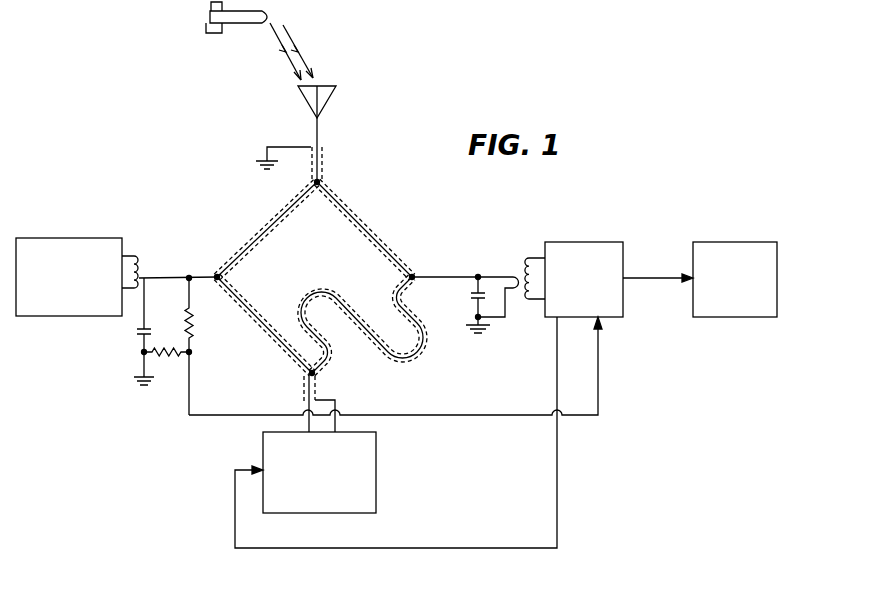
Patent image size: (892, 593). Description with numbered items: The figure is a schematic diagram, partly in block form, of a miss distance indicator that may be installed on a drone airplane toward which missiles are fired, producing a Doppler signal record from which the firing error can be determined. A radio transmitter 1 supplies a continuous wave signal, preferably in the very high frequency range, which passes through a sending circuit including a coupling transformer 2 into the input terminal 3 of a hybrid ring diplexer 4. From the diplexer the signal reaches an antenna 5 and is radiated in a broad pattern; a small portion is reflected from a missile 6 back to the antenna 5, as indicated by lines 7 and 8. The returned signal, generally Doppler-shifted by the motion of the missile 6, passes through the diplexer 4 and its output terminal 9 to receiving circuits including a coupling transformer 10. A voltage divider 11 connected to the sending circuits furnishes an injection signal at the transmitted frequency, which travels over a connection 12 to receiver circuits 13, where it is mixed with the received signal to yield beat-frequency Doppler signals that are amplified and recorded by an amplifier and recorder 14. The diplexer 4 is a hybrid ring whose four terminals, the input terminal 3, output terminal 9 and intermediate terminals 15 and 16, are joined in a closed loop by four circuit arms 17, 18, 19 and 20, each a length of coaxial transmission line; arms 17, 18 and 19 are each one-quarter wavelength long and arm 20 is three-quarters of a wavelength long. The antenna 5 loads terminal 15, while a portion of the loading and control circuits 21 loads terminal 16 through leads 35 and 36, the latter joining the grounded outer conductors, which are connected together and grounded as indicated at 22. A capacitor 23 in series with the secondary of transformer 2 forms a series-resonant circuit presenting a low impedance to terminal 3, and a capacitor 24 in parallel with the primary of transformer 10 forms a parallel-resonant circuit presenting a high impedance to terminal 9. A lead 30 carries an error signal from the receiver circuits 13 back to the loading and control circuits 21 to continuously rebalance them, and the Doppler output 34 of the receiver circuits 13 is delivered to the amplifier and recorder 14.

The radio transmitter 1 is at (69, 244).
The coupling transformer 2 is at (140, 272).
The input terminal 3 is at (216, 272).
The hybrid ring diplexer 4 is at (320, 277).
The antenna 5 is at (320, 134).
The missile 6 is at (205, 26).
The line 7 is at (284, 70).
The line 8 is at (300, 58).
The output terminal 9 is at (414, 275).
The coupling transformer 10 is at (523, 268).
The voltage divider 11 is at (186, 319).
The connection 12 is at (468, 418).
The receiver circuits 13 is at (590, 234).
The amplifier and recorder 14 is at (744, 232).
The intermediate terminal 15 is at (322, 184).
The intermediate terminal 16 is at (314, 376).
The circuit arm 17 is at (291, 207).
The circuit arm 18 is at (378, 238).
The circuit arm 19 is at (264, 345).
The circuit arm 20 is at (334, 296).
The loading and control circuits 21 is at (376, 470).
The ground connection 22 is at (265, 148).
The capacitor 23 is at (136, 334).
The capacitor 24 is at (466, 296).
The lead 30 is at (558, 474).
The doppler signal line 34 is at (645, 281).
The lead 35 is at (305, 403).
The lead 36 is at (338, 402).